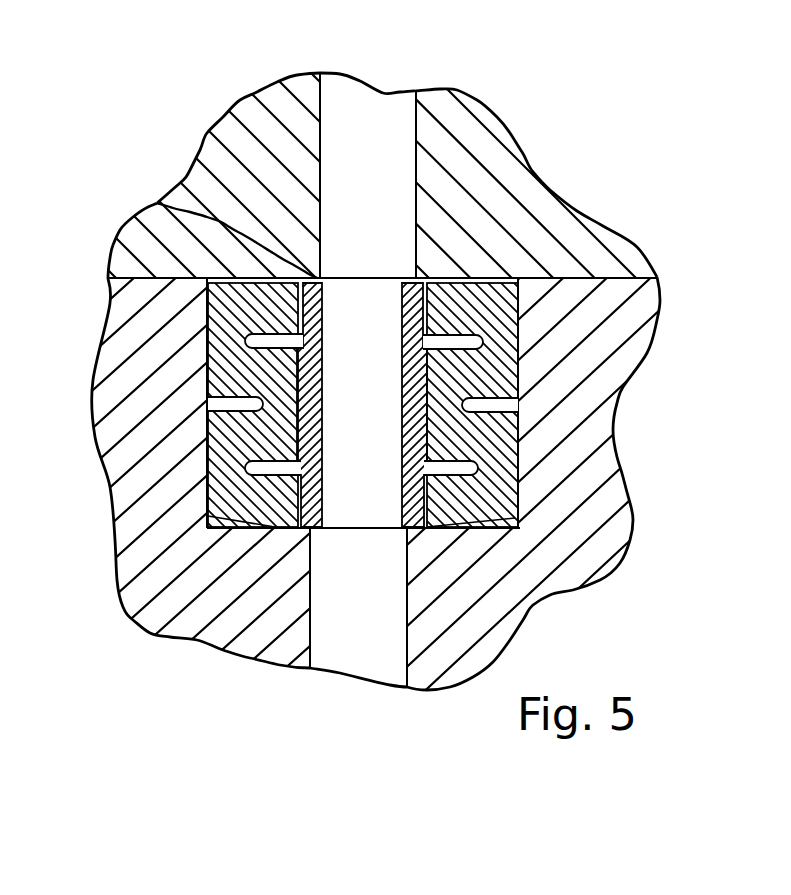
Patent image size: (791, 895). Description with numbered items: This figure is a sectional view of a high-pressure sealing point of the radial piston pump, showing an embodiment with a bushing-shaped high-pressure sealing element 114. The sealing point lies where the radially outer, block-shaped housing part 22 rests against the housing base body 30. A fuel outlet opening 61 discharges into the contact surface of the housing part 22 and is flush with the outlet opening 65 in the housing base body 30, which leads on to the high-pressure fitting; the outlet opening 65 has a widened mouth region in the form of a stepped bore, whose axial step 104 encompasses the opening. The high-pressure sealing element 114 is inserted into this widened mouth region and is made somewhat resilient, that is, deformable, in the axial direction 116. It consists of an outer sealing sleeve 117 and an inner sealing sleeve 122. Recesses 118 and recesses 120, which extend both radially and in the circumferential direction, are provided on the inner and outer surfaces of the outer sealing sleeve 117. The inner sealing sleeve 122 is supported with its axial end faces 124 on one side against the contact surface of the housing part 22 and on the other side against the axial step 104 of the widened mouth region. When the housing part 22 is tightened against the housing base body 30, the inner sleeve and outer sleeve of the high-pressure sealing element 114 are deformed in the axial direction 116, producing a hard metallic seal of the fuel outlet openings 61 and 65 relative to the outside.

The housing part 22 is at (510, 208).
The housing base body 30 is at (600, 462).
The fuel outlet opening 61 is at (402, 92).
The outlet opening 65 is at (310, 628).
The axial step 104 is at (520, 528).
The high-pressure sealing element 114 is at (533, 352).
The axial direction 116 is at (356, 385).
The outer sealing sleeve 117 is at (283, 529).
The recess 118 is at (462, 406).
The recess 120 is at (462, 342).
The inner sealing sleeve 122 is at (390, 515).
The axial end faces 124 is at (160, 203).